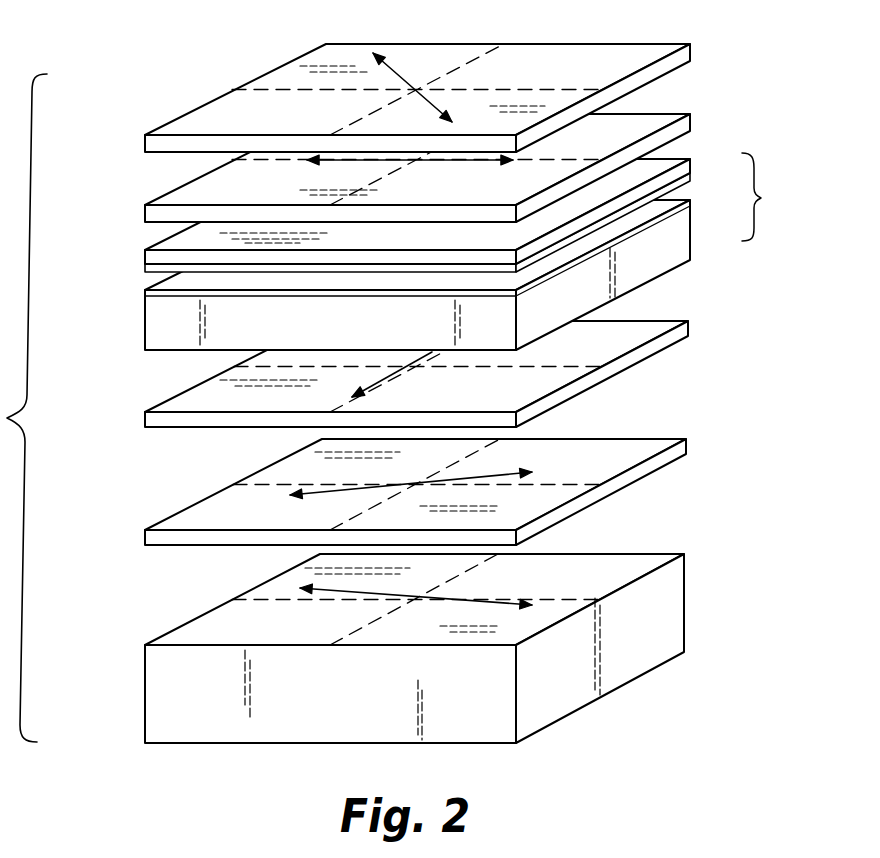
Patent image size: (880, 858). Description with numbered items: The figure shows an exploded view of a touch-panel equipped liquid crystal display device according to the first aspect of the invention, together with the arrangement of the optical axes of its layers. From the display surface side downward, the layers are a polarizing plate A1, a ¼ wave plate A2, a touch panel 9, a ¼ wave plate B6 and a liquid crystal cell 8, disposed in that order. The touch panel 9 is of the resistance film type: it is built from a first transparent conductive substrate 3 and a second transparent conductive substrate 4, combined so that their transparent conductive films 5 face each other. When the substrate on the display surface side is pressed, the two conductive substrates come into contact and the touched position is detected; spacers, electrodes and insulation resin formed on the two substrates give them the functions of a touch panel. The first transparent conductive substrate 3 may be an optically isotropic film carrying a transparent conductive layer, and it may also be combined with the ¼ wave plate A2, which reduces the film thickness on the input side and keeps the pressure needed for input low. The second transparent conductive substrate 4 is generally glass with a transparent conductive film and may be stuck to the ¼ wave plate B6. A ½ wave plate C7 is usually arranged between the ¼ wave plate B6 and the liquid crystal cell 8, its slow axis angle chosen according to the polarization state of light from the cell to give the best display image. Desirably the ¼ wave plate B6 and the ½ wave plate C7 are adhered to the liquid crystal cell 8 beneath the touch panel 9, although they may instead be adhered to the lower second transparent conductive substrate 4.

The polarizing plate A1 is at (690, 48).
The ¼ wave plate A2 is at (690, 118).
The first transparent conductive substrate 3 is at (690, 163).
The second transparent conductive substrate 4 is at (690, 232).
The transparent conductive films 5 is at (146, 298).
The ¼ wave plate B6 is at (688, 327).
The ½ wave plate C7 is at (686, 443).
The liquid crystal cell 8 is at (676, 603).
The touch panel 9 is at (759, 197).